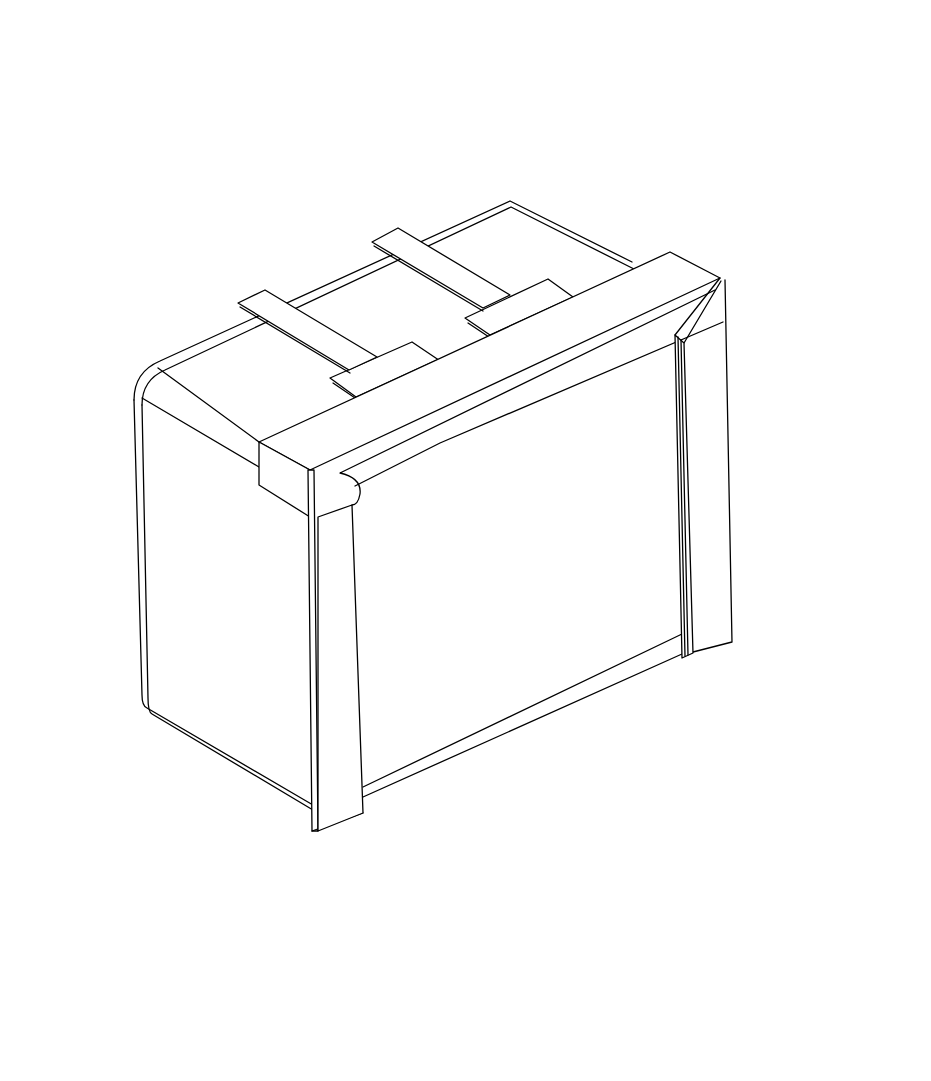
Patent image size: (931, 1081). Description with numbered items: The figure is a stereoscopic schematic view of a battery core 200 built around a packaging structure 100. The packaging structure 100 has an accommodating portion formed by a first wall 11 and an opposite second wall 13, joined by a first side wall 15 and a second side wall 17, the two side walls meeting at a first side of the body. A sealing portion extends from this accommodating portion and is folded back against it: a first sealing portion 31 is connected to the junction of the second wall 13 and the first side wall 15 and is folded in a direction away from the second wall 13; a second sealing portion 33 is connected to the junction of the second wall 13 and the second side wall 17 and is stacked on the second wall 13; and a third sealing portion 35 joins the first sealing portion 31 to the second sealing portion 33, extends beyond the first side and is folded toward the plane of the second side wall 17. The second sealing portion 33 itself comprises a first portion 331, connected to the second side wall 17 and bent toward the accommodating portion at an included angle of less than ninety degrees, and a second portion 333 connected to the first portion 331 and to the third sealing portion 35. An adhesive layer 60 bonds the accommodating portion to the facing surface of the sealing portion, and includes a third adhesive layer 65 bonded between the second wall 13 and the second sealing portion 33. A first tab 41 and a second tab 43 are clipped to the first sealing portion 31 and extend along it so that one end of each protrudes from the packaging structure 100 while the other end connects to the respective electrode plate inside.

The battery core 200 is at (424, 67).
The packaging structure 100 is at (714, 230).
The first wall 11 is at (133, 458).
The second wall 13 is at (617, 560).
The first side wall 15 is at (520, 223).
The second side wall 17 is at (223, 710).
The first sealing portion 31 is at (635, 287).
The second sealing portion 33 is at (513, 817).
The first portion 331 is at (335, 615).
The second portion 333 is at (350, 503).
The third sealing portion 35 is at (270, 482).
The first tab 41 is at (382, 230).
The second tab 43 is at (245, 288).
The adhesive layer 60 is at (682, 523).
The third adhesive layer 65 is at (684, 496).